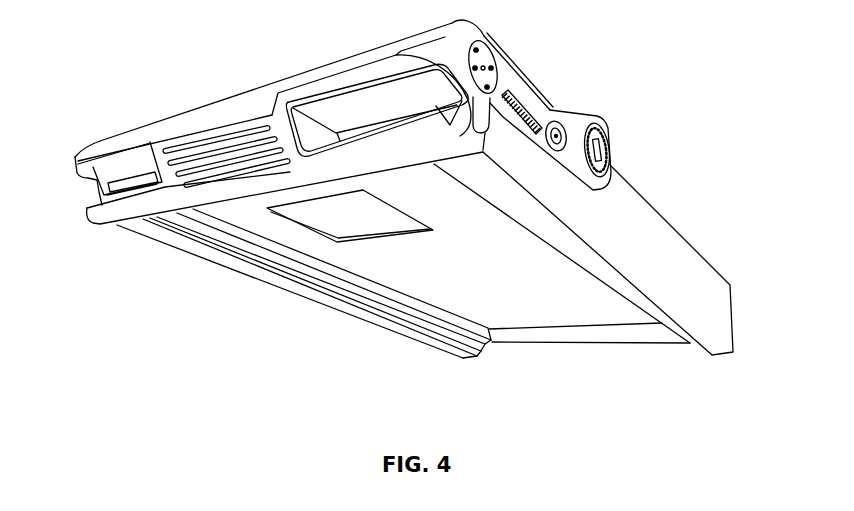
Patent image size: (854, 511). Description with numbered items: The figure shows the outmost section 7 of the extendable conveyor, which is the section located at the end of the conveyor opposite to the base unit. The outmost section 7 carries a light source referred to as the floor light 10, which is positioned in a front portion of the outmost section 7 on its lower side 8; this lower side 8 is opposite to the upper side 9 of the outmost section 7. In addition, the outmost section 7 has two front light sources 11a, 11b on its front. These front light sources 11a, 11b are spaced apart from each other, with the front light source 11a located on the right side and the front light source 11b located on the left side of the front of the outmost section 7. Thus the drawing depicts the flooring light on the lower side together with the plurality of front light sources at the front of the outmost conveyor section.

The outmost section 7 is at (623, 203).
The lower side 8 is at (396, 362).
The upper side 9 is at (617, 109).
The floor light 10 is at (343, 212).
The front light source 11a is at (115, 167).
The front light source 11b is at (351, 105).